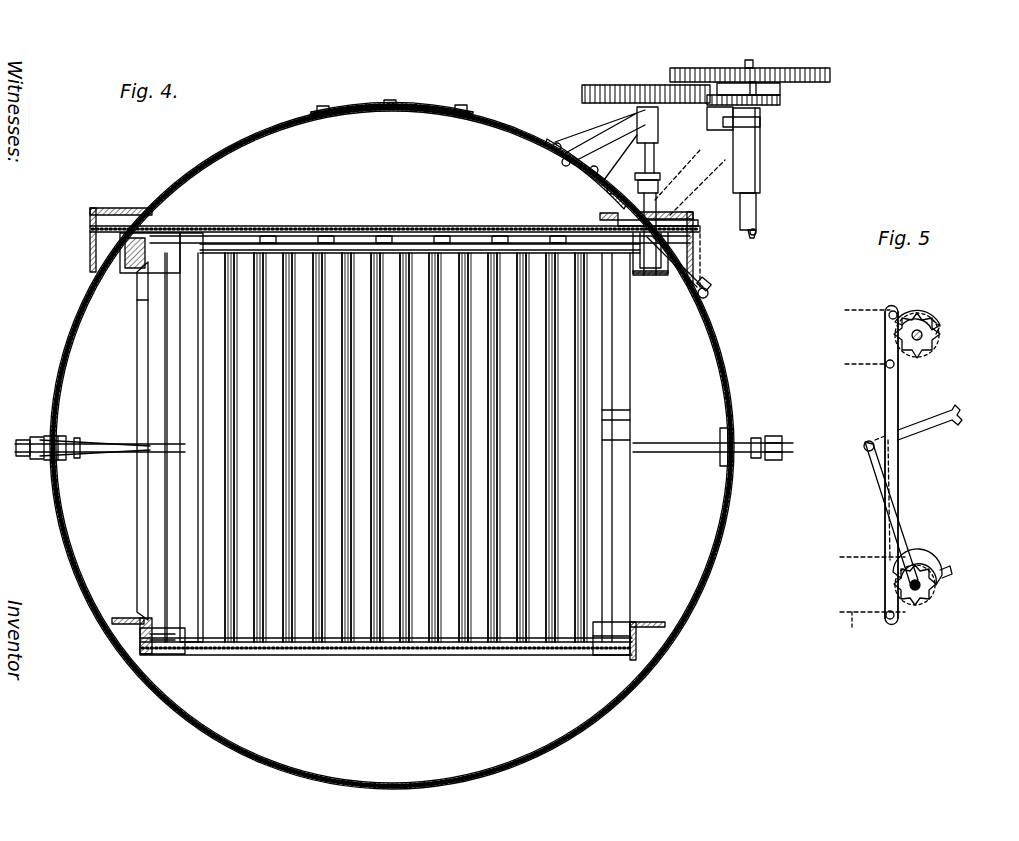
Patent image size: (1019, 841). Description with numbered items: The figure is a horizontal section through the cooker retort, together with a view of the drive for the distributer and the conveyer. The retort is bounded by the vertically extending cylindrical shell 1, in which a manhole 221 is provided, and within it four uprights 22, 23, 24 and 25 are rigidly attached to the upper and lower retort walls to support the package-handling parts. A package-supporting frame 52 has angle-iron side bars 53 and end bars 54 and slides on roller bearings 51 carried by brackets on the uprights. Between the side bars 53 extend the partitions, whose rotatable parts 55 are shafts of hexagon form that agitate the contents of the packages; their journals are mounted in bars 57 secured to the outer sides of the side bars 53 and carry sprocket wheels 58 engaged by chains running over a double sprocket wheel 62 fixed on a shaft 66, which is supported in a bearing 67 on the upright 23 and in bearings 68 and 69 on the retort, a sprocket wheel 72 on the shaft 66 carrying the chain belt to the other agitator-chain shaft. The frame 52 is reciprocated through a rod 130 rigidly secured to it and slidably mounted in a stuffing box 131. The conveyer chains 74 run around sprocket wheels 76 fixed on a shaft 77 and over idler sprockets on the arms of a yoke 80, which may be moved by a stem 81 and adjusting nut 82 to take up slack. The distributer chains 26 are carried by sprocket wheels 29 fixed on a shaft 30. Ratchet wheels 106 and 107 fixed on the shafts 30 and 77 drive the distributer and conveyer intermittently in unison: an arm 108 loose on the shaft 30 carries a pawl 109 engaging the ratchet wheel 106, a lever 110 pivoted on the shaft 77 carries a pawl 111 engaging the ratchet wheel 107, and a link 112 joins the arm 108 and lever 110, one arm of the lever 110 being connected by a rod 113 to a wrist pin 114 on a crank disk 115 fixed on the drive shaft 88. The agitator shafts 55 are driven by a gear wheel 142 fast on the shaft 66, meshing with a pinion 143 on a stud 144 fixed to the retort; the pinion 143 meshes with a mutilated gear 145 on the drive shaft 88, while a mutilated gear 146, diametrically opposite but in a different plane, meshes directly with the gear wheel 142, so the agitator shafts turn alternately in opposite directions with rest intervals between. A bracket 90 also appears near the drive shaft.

In FIG. 4, the cylindrical shell 1 is at (540, 150).
In FIG. 4, the upright 22 is at (118, 250).
In FIG. 4, the upright 23 is at (660, 276).
In FIG. 4, the upright 24 is at (120, 626).
In FIG. 4, the upright 25 is at (660, 622).
In FIG. 5, the endless chain 26 is at (869, 299).
In FIG. 5, the sprocket wheel 29 is at (940, 352).
In FIG. 5, the shaft 30 is at (920, 342).
In FIG. 4, the roller bearing 51 is at (195, 226).
In FIG. 4, the frame 52 is at (152, 437).
In FIG. 4, the side bar 53 is at (398, 244).
In FIG. 4, the end bar 54 is at (600, 411).
In FIG. 4, the rotatable part 55 is at (295, 512).
In FIG. 4, the bar 57 is at (462, 253).
In FIG. 4, the sprocket wheel 58 is at (352, 236).
In FIG. 4, the sprocket wheel 62 is at (706, 228).
In FIG. 4, the shaft 66 is at (654, 156).
In FIG. 4, the bearing 67 is at (680, 250).
In FIG. 4, the bearing 68 is at (656, 200).
In FIG. 4, the bearing 69 is at (640, 117).
In FIG. 4, the sprocket wheel 72 is at (618, 220).
In FIG. 5, the chain 74 is at (846, 630).
In FIG. 5, the sprocket wheel 76 is at (935, 595).
In FIG. 5, the shaft 77 is at (922, 600).
In FIG. 4, the yoke 80 is at (137, 356).
In FIG. 4, the stem 81 is at (88, 438).
In FIG. 4, the adjusting nut 82 is at (26, 438).
In FIG. 4, the drive shaft 88 is at (754, 238).
In FIG. 4, the bracket 90 is at (760, 167).
In FIG. 5, the ratchet wheel 106 is at (940, 326).
In FIG. 5, the ratchet wheel 107 is at (936, 588).
In FIG. 5, the arm 108 is at (885, 358).
In FIG. 5, the pawl 109 is at (922, 310).
In FIG. 5, the lever 110 is at (900, 638).
In FIG. 5, the pawl 111 is at (928, 564).
In FIG. 5, the link 112 is at (885, 406).
In FIG. 5, the rod 113 is at (958, 412).
In FIG. 4, the wrist pin 114 is at (752, 62).
In FIG. 4, the crank disk 115 is at (826, 68).
In FIG. 4, the rod 130 is at (682, 455).
In FIG. 4, the stuffing box 131 is at (758, 460).
In FIG. 4, the gear wheel 142 is at (622, 84).
In FIG. 4, the pinion 143 is at (708, 68).
In FIG. 4, the stud 144 is at (707, 124).
In FIG. 4, the mutilated gear 145 is at (775, 105).
In FIG. 4, the mutilated gear 146 is at (780, 90).
In FIG. 4, the manhole 221 is at (432, 104).